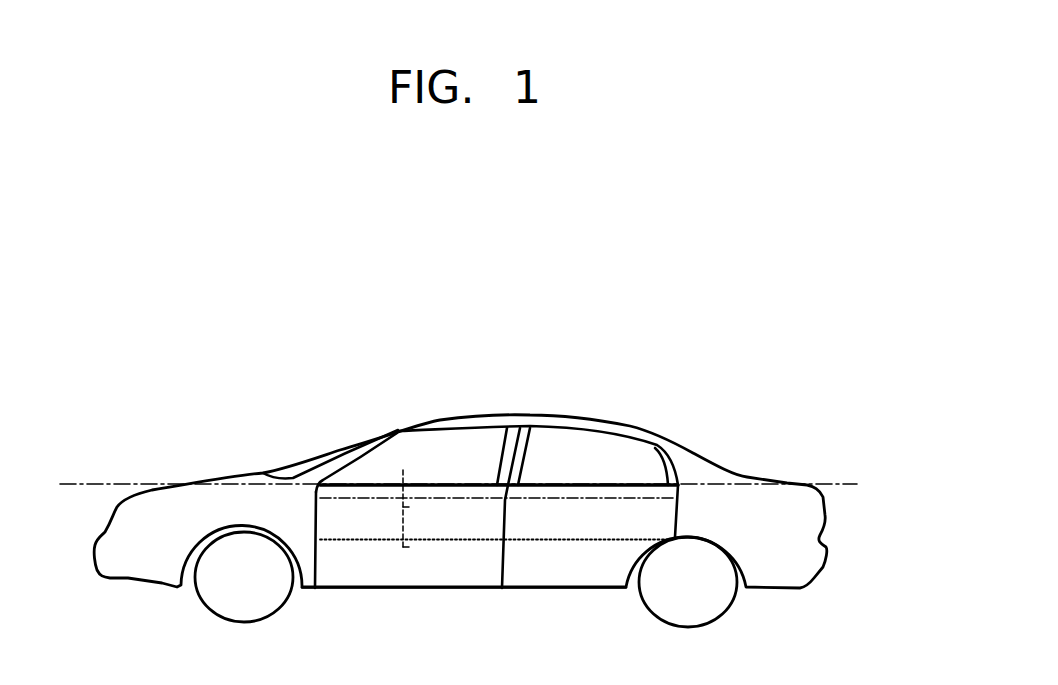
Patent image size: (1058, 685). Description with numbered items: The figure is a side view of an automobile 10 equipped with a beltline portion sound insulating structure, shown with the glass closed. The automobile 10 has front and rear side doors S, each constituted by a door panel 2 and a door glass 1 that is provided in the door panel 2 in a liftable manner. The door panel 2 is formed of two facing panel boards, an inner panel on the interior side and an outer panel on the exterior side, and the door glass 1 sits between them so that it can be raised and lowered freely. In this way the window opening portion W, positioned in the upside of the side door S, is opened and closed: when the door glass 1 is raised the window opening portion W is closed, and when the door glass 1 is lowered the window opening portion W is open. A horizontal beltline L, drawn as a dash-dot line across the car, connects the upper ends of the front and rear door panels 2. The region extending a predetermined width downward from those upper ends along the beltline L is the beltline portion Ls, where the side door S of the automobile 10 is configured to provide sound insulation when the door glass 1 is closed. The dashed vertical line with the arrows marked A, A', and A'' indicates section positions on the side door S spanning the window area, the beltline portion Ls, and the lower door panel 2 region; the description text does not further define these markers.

The automobile 10 is at (760, 373).
The door glass 1 is at (446, 447).
The door panel 2 is at (458, 562).
The window opening portion W is at (435, 457).
The side door S is at (373, 515).
The beltline portion Ls is at (588, 493).
The beltline L is at (459, 485).
The section position A is at (417, 504).
The section position A' is at (419, 506).
The section position A'' is at (420, 550).